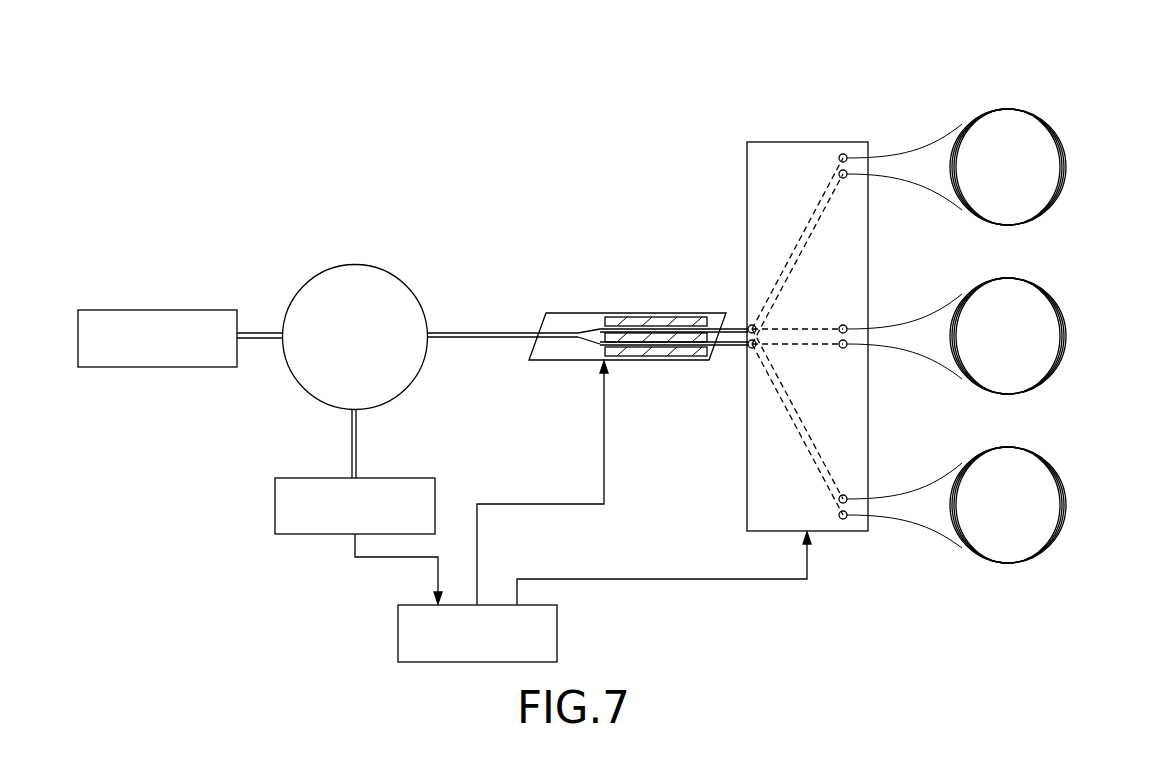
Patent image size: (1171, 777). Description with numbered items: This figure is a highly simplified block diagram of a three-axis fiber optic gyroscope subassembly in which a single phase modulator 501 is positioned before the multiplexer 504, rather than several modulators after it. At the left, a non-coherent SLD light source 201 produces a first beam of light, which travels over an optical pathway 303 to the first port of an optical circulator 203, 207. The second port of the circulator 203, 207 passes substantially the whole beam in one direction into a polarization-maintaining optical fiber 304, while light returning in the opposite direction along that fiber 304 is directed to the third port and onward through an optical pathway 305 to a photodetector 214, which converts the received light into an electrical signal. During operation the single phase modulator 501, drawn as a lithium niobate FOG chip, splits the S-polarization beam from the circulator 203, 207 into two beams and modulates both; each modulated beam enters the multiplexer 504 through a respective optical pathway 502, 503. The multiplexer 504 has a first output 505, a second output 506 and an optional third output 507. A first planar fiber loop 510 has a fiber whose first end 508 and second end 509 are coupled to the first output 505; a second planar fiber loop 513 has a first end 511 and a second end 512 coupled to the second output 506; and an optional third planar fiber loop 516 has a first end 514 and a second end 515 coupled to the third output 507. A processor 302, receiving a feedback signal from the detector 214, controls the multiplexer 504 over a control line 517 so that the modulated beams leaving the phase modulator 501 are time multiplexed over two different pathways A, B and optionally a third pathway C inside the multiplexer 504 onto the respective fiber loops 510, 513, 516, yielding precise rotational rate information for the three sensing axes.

The SLD light source 201 is at (157, 310).
The optical circulator 203 is at (355, 288).
The optical circulator 207 is at (353, 265).
The photodetector 214 is at (275, 505).
The processor 302 is at (398, 630).
The optical pathway 303 is at (260, 342).
The polarization-maintaining optical fiber 304 is at (483, 333).
The optical pathway 305 is at (358, 445).
The single phase modulator 501 is at (637, 317).
The optical pathway 502 is at (713, 320).
The optical pathway 503 is at (745, 337).
The multiplexer 504 is at (808, 142).
The first output 505 is at (843, 138).
The second output 506 is at (832, 360).
The third output 507 is at (849, 531).
The first end 508 is at (935, 148).
The second end 509 is at (905, 177).
The first planar fiber loop 510 is at (1065, 148).
The first end 511 is at (935, 317).
The second end 512 is at (905, 347).
The second planar fiber loop 513 is at (1065, 318).
The first end 514 is at (935, 489).
The second end 515 is at (905, 518).
The third planar fiber loop 516 is at (1065, 486).
The control line processor to multiplexer 517 is at (660, 579).
The first pathway A is at (785, 227).
The second pathway B is at (798, 320).
The third pathway C is at (792, 435).